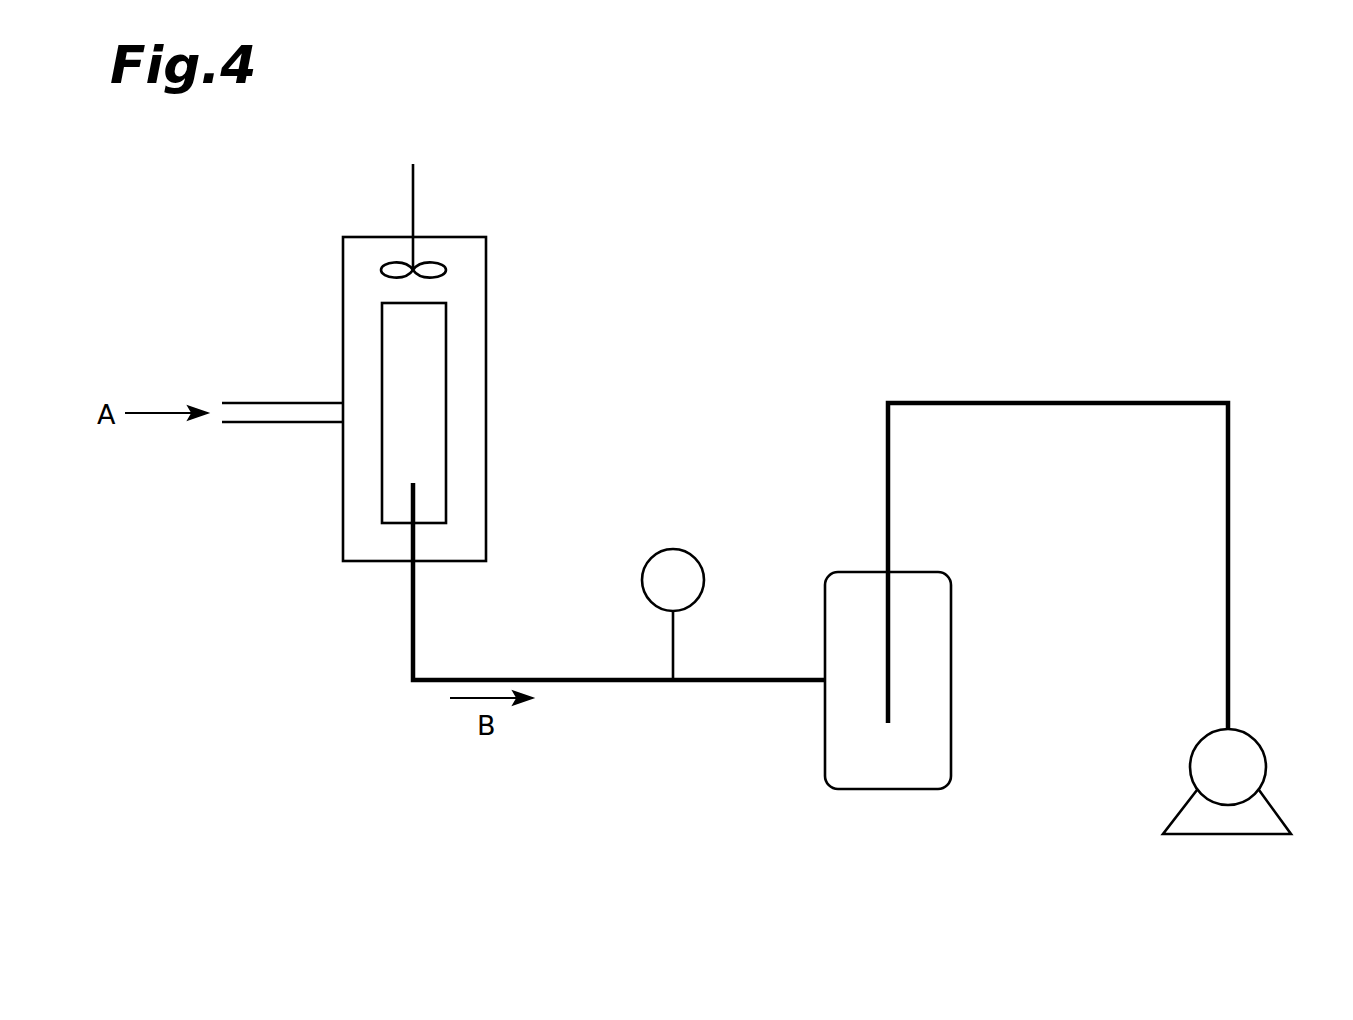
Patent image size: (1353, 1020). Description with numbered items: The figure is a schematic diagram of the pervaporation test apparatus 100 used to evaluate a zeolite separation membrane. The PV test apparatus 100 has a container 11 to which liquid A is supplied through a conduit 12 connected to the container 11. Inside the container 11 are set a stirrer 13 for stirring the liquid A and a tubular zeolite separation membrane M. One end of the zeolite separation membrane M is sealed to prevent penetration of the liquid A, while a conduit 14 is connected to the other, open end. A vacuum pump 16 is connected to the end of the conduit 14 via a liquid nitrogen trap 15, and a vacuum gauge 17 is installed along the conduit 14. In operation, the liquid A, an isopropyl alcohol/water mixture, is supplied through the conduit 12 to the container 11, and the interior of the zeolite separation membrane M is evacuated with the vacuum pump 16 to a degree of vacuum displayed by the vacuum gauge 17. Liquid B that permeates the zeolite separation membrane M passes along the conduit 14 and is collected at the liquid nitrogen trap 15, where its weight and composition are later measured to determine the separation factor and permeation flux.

The PV test apparatus 100 is at (1128, 269).
The container 11 is at (487, 282).
The zeolite separation membrane M is at (447, 328).
The stirrer 13 is at (432, 264).
The conduit 12 is at (270, 423).
The conduit 14 is at (411, 620).
The vacuum gauge 17 is at (676, 550).
The liquid nitrogen trap 15 is at (952, 630).
The vacuum pump 16 is at (1263, 750).